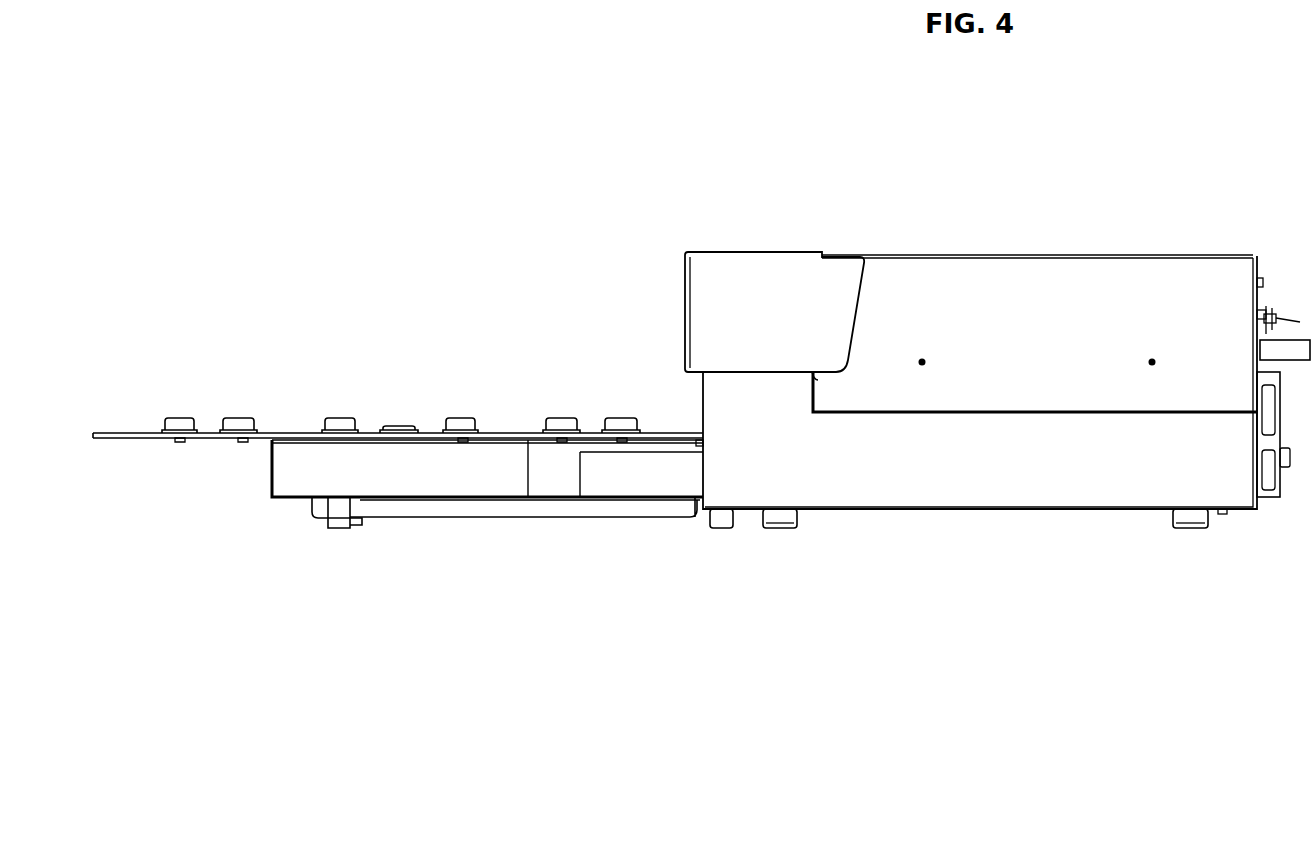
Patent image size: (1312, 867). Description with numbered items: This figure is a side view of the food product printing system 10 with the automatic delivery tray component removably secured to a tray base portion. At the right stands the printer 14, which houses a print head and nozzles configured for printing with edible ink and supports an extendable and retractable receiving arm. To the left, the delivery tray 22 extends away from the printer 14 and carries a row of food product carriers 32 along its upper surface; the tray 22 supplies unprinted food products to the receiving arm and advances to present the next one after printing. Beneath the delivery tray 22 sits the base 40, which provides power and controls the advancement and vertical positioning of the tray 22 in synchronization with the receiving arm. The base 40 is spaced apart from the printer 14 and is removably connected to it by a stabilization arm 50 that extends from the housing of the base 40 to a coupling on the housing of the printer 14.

The printing system 10 is at (232, 175).
The printer 14 is at (657, 218).
The delivery tray 22 is at (289, 404).
The puck / carrier 32 is at (178, 417).
The base 40 is at (288, 472).
The stabilization arm 50 is at (535, 510).